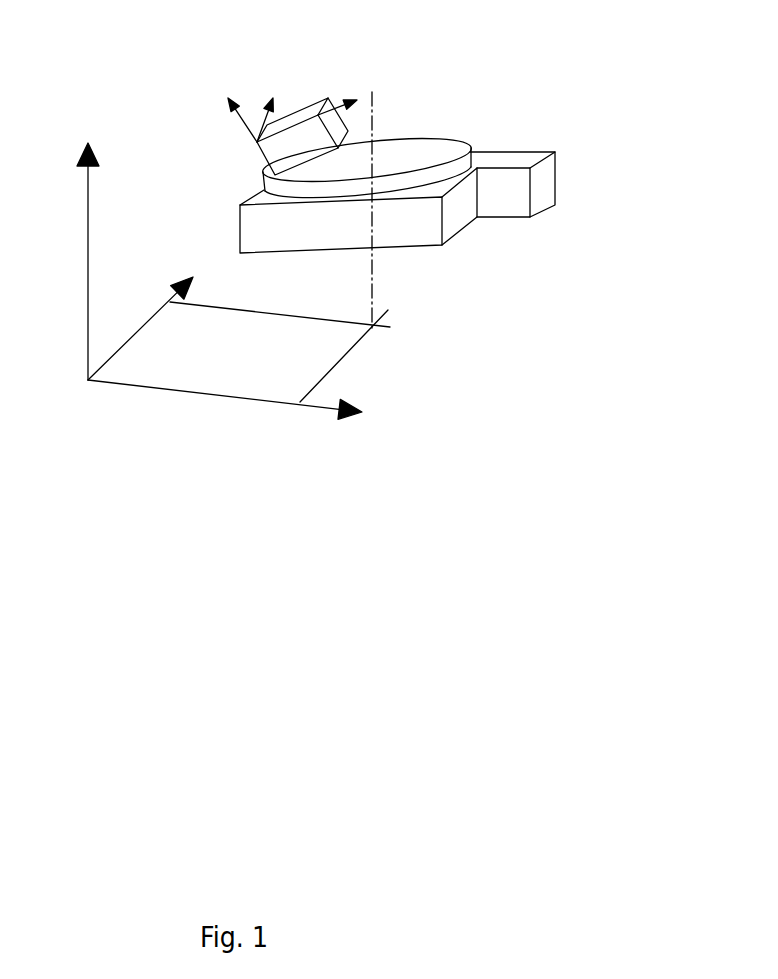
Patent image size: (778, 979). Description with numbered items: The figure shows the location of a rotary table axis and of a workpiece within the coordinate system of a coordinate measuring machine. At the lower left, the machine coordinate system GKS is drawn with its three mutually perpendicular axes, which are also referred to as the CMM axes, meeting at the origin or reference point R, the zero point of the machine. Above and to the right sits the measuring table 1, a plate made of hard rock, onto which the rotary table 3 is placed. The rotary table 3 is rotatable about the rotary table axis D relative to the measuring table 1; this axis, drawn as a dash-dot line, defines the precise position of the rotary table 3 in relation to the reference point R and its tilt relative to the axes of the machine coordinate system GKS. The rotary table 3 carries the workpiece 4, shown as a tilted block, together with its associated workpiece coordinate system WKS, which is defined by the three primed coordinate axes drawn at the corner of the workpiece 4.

The measuring table 1 is at (428, 230).
The rotary table 3 is at (445, 148).
The workpiece 4 is at (308, 114).
The rotary table axis D is at (372, 125).
The reference point R is at (90, 388).
The workpiece coordinate system WKS is at (233, 135).
The machine coordinate system GKS is at (185, 450).